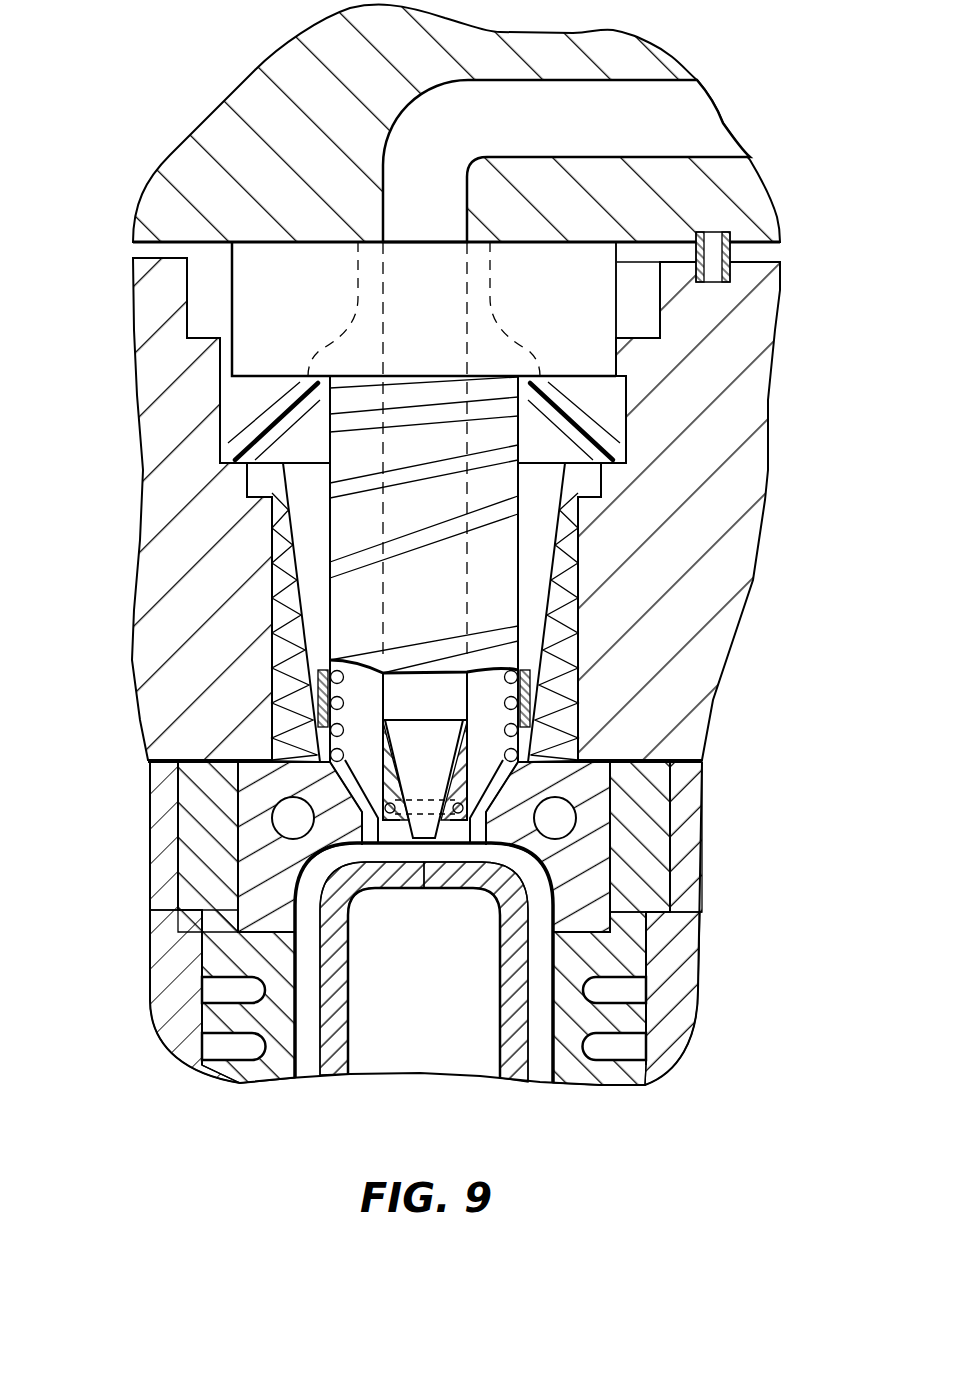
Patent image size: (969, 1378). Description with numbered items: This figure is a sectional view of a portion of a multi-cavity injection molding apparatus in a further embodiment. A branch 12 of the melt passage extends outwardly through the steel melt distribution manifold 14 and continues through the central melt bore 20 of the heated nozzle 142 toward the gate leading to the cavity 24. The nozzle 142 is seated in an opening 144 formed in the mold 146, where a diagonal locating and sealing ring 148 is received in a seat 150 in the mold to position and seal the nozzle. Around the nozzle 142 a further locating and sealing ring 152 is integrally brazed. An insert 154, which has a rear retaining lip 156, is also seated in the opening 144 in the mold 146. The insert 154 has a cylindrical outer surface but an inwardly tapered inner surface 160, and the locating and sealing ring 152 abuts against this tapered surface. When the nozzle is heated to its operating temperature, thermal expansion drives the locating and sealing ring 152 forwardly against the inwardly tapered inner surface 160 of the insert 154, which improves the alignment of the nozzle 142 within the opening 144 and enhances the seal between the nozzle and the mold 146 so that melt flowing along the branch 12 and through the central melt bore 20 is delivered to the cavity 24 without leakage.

The branch 12 is at (703, 125).
The melt distribution manifold 14 is at (647, 60).
The central melt bore 20 is at (405, 523).
The cavity 24 is at (313, 1060).
The nozzle 142 is at (502, 585).
The opening 144 is at (543, 527).
The mold 146 is at (750, 322).
The diagonal locating and sealing ring 148 is at (285, 412).
The seat 150 is at (240, 438).
The locating and sealing ring 152 is at (550, 700).
The insert 154 is at (272, 622).
The rear retaining lip 156 is at (590, 487).
The inwardly tapered inner surface 160 is at (300, 597).